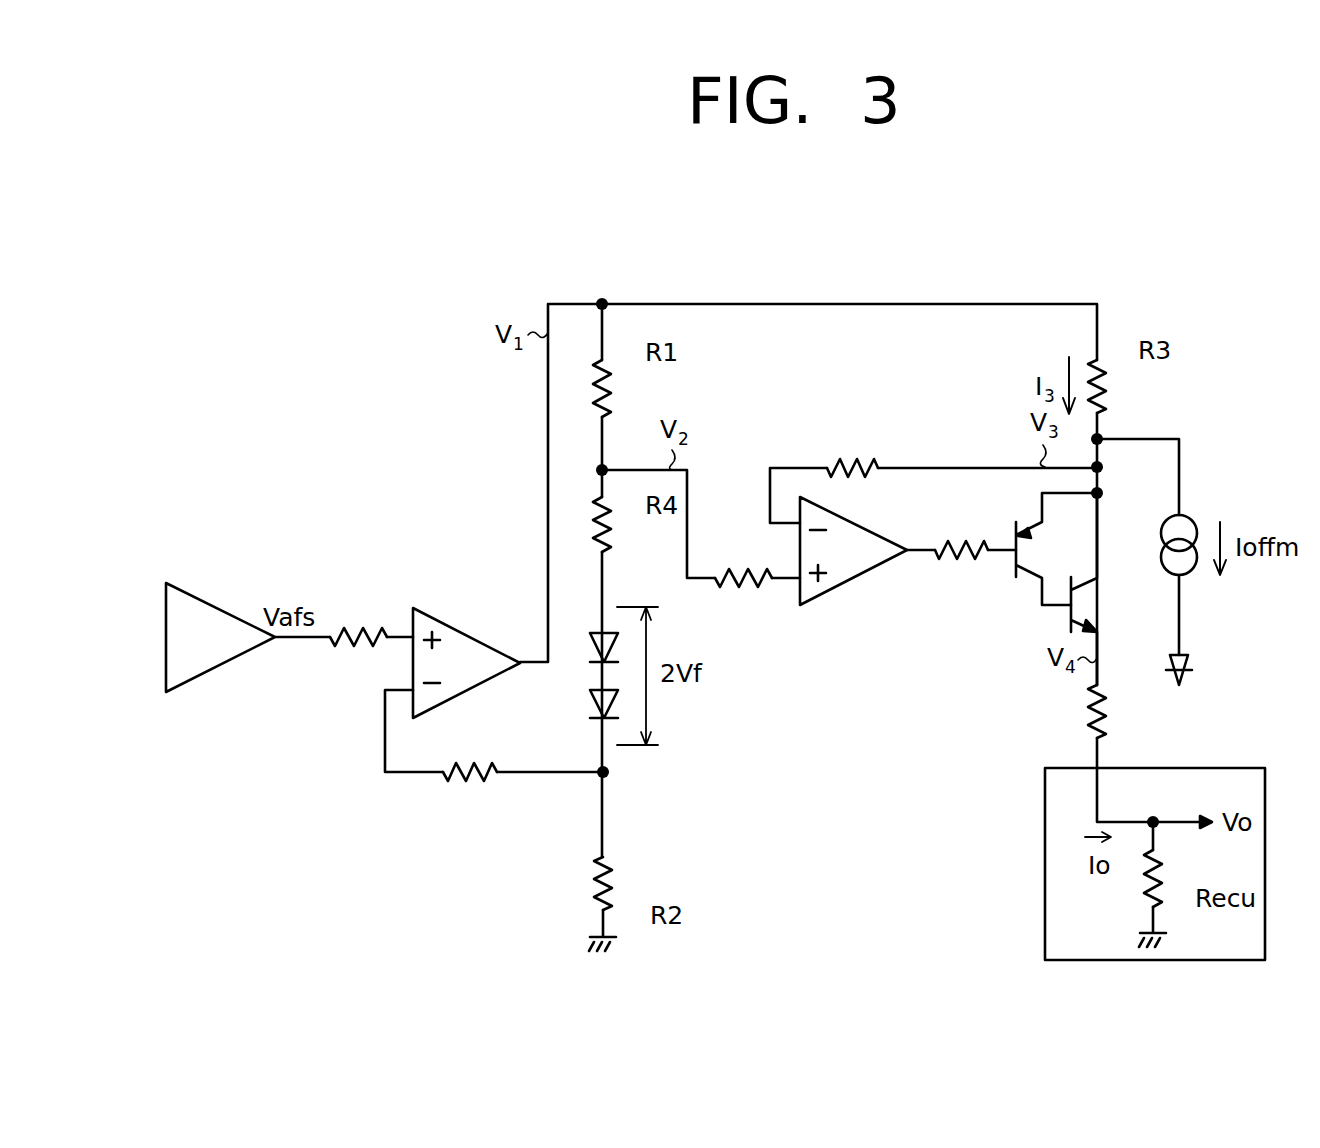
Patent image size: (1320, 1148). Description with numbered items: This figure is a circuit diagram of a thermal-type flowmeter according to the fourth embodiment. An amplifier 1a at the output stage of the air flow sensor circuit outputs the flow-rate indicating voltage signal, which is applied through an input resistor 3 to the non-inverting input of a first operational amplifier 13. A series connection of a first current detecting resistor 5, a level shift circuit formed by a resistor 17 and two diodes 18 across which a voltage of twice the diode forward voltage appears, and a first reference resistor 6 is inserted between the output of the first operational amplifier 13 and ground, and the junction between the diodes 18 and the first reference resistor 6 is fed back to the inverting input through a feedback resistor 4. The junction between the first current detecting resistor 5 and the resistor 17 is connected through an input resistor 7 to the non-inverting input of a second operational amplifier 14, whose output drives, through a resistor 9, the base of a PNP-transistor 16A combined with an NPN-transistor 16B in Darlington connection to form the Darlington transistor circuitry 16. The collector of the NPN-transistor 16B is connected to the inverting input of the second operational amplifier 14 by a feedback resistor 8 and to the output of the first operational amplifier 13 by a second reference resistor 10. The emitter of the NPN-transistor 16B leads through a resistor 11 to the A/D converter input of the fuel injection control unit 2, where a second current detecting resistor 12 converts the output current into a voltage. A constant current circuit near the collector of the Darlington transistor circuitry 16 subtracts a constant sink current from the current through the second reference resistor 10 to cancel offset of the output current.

The amplifier 1a is at (227, 610).
The fuel injection control unit 2 is at (1212, 768).
The input resistor 3 is at (360, 622).
The feedback resistor 4 is at (468, 790).
The first current detecting resistor 5 is at (618, 387).
The first reference resistor 6 is at (620, 880).
The input resistor 7 is at (745, 597).
The feedback resistor 8 is at (857, 455).
The resistor 9 is at (965, 535).
The second reference resistor 10 is at (1112, 385).
The resistor 11 is at (1087, 710).
The second current detecting resistor 12 is at (1170, 862).
The first operational amplifier 13 is at (470, 633).
The second operational amplifier 14 is at (851, 585).
The Darlington transistor circuitry 16 is at (1040, 565).
The PNP-transistor 16A is at (1056, 549).
The NPN-transistor 16B is at (1109, 589).
The resistor 17 is at (618, 538).
The diodes 18 is at (587, 687).